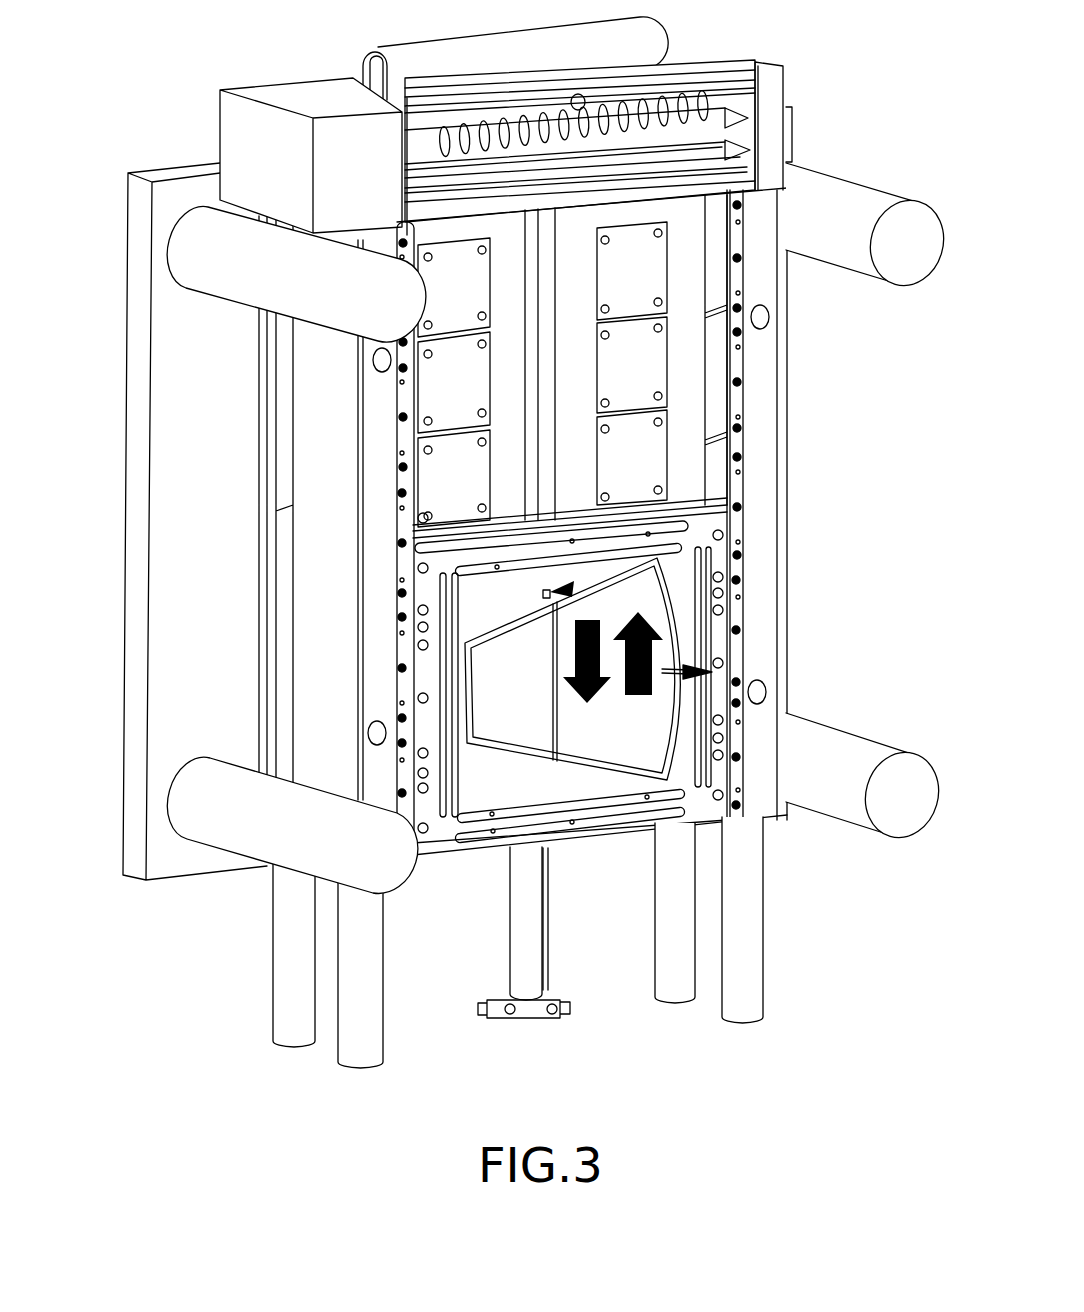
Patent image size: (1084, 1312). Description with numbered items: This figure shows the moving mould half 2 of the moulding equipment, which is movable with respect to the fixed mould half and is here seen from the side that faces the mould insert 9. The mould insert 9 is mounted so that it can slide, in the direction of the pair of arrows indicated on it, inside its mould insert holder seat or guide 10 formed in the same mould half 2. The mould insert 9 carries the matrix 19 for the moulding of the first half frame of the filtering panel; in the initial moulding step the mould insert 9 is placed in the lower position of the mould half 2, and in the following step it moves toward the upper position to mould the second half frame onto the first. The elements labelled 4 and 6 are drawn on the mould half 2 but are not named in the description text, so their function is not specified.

The mould half 2 is at (340, 582).
The top roller 4 is at (377, 53).
The guide roller 6 is at (853, 212).
The mould insert 9 is at (672, 568).
The mould insert holder seat 10 is at (653, 373).
The matrix 19 is at (703, 672).